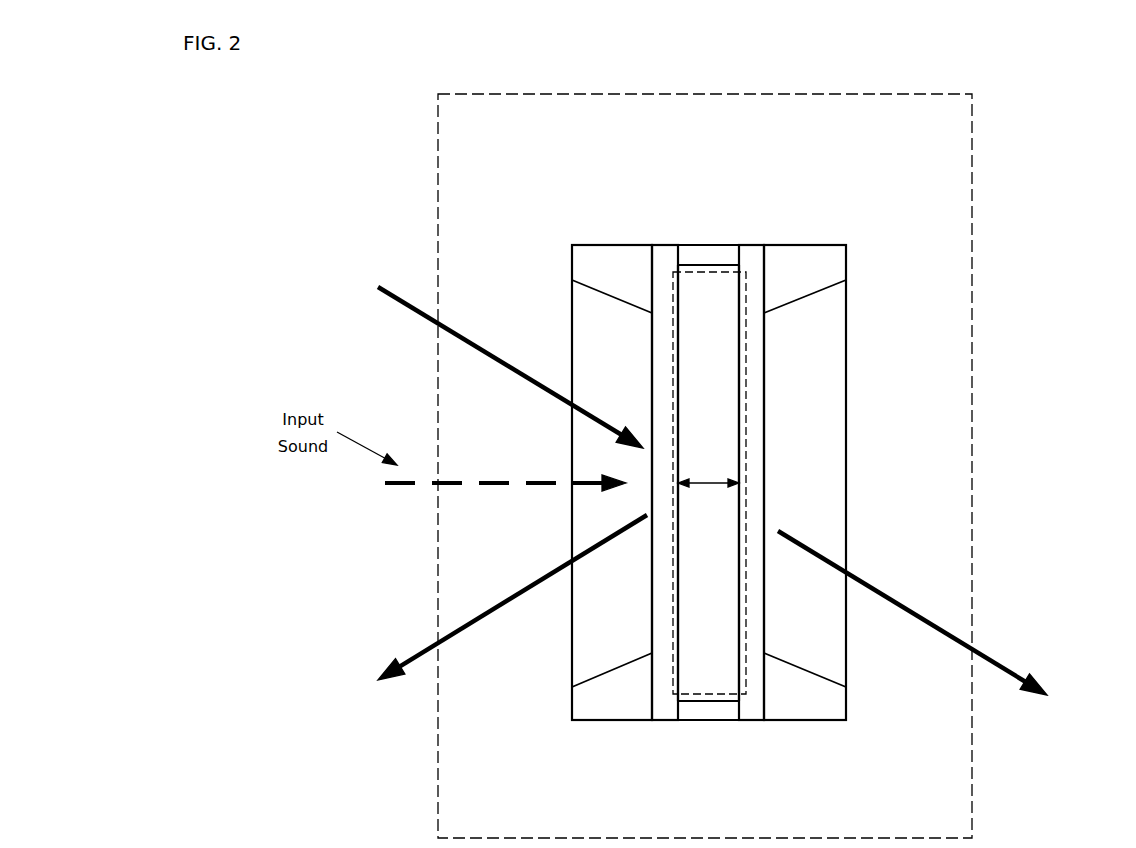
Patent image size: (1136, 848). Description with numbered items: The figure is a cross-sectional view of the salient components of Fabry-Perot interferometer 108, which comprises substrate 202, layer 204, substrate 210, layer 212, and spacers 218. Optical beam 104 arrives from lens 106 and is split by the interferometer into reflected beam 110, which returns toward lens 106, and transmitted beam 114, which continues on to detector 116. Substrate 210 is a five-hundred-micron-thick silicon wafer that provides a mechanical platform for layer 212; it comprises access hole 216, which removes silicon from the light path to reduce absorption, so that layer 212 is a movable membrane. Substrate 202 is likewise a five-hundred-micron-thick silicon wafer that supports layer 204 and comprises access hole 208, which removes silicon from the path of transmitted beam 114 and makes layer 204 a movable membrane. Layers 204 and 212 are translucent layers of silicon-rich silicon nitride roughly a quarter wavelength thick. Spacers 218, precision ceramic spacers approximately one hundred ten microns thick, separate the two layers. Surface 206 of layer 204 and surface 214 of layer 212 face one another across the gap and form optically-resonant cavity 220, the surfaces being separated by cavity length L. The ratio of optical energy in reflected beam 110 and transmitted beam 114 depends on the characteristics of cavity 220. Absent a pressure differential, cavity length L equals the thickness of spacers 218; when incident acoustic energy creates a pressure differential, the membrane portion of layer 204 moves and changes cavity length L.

The Fabry-Perot interferometer 108 is at (697, 123).
The substrate 210 is at (645, 278).
The substrate 202 is at (838, 276).
The layer 212 is at (665, 253).
The layer 204 is at (752, 252).
The surface 214 is at (678, 415).
The surface 206 is at (738, 413).
The access hole 216 is at (593, 328).
The access hole 208 is at (825, 328).
The spacers 218 is at (707, 252).
The optically-resonant cavity 220 is at (673, 587).
The cavity length L is at (708, 483).
The optical beam 104 is at (412, 308).
The reflected beam 110 is at (410, 657).
The transmitted beam 114 is at (893, 598).
The lens 106 is at (354, 470).
The detector 116 is at (1073, 725).